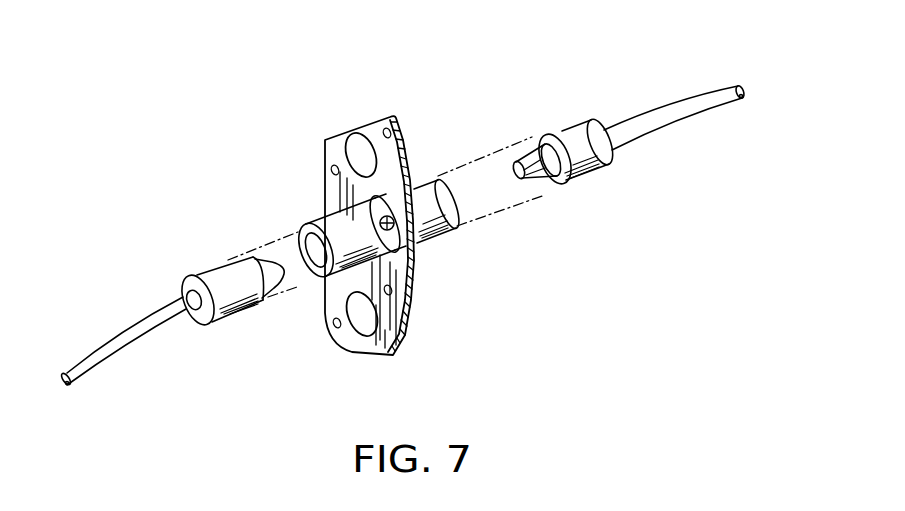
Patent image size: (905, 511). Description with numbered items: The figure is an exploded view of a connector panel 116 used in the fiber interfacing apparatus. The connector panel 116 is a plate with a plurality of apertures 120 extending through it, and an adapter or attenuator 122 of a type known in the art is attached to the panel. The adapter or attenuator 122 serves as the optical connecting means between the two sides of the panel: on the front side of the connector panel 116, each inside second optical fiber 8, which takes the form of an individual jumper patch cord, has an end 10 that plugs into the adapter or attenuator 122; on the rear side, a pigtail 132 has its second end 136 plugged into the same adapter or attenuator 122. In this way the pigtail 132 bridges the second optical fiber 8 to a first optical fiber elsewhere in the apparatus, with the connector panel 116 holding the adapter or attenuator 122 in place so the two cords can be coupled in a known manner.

The second optical fibers 8 is at (143, 327).
The end 10 is at (220, 272).
The connector panel 116 is at (377, 122).
The apertures 120 is at (357, 149).
The adapter or attenuator 122 is at (433, 212).
The pigtail 132 is at (653, 122).
The second end 136 is at (598, 130).